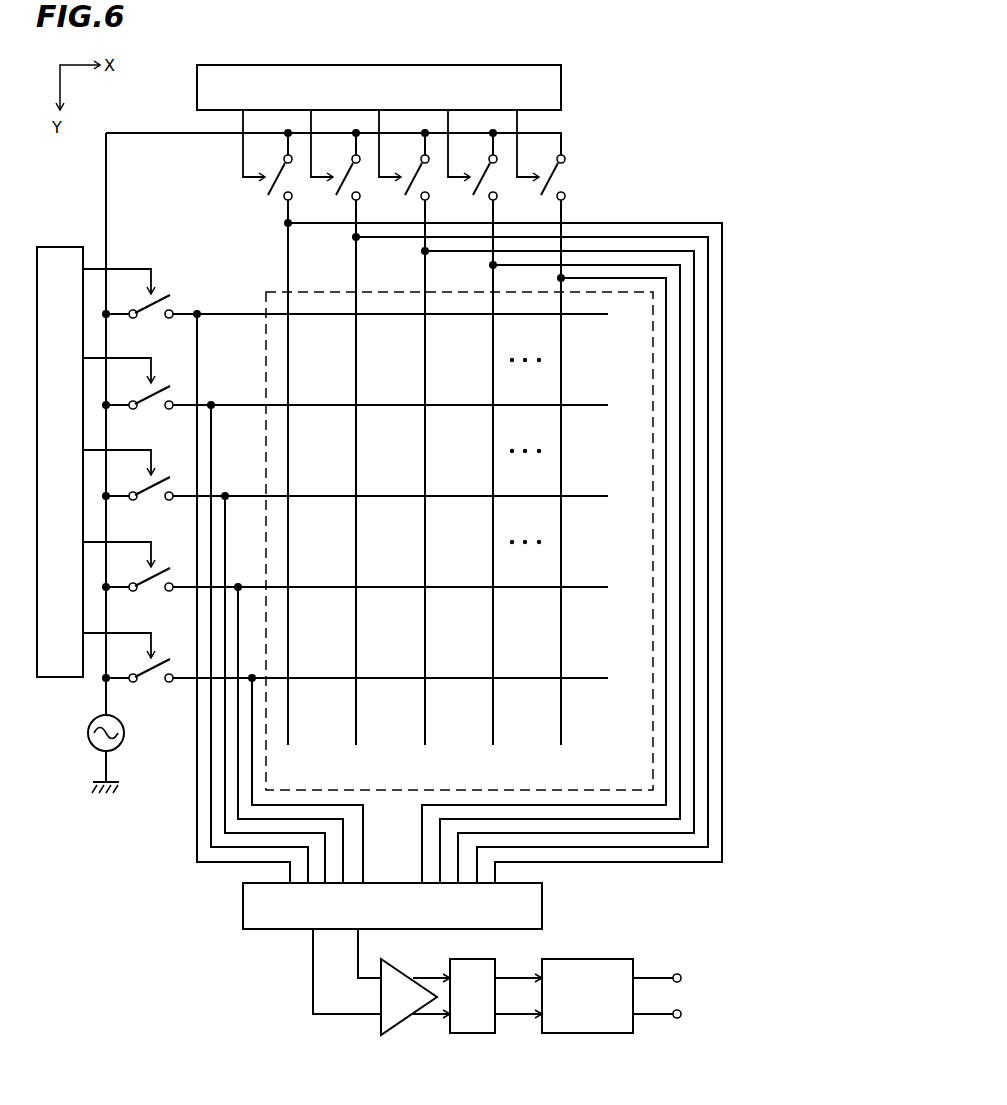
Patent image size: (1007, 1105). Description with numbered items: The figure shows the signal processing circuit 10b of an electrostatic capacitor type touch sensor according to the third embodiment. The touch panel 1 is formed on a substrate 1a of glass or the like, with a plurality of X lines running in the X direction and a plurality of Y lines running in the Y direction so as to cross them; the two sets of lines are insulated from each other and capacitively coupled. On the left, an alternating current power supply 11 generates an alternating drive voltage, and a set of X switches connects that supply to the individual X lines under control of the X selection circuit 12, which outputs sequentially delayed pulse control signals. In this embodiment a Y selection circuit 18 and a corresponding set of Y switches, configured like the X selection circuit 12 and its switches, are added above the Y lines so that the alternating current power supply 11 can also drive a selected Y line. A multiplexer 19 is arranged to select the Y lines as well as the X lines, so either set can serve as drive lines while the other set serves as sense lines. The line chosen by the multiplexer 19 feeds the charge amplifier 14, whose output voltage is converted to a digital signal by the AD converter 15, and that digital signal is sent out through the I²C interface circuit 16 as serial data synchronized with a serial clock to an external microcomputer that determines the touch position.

The touch panel 1 is at (236, 290).
The substrate 1a is at (274, 292).
The signal processing circuit 10b is at (643, 80).
The alternating current power supply 11 is at (124, 735).
The X selection circuit 12 is at (61, 252).
The charge amplifier 14 is at (392, 1034).
The AD converter 15 is at (481, 1034).
The I²C interface circuit 16 is at (597, 1034).
The Y selection circuit 18 is at (561, 88).
The multiplexer 19 is at (542, 906).